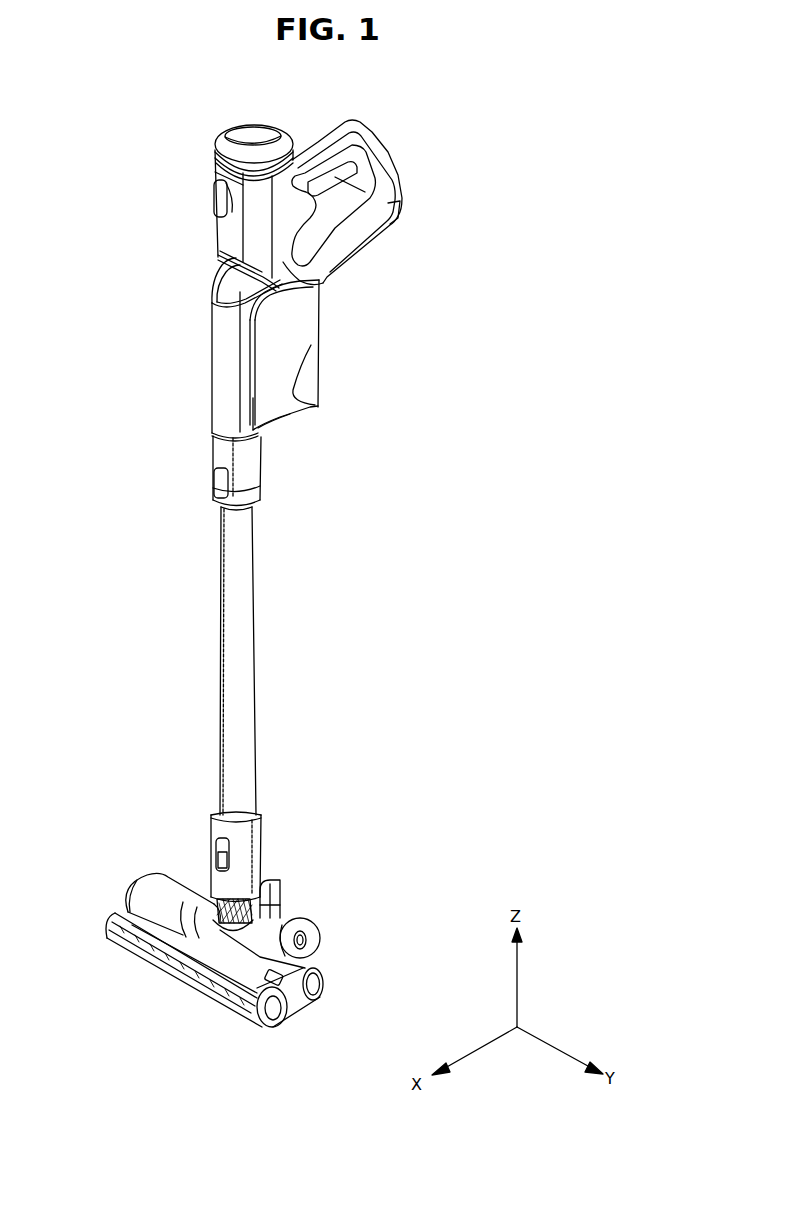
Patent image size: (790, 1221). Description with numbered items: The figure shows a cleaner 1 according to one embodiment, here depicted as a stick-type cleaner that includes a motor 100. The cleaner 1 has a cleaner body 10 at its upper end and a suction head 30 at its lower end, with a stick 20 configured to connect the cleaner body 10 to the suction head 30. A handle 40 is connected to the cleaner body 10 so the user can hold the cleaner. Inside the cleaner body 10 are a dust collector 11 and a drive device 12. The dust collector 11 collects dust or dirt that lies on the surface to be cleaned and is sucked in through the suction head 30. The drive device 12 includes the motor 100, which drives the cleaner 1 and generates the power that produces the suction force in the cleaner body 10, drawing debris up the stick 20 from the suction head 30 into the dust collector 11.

The cleaner 1 is at (101, 109).
The cleaner body 10 is at (200, 343).
The dust collector 11 is at (304, 328).
The drive device 12 is at (226, 146).
The stick 20 is at (218, 611).
The suction head 30 is at (120, 883).
The handle 40 is at (330, 147).
The motor 100 is at (216, 210).